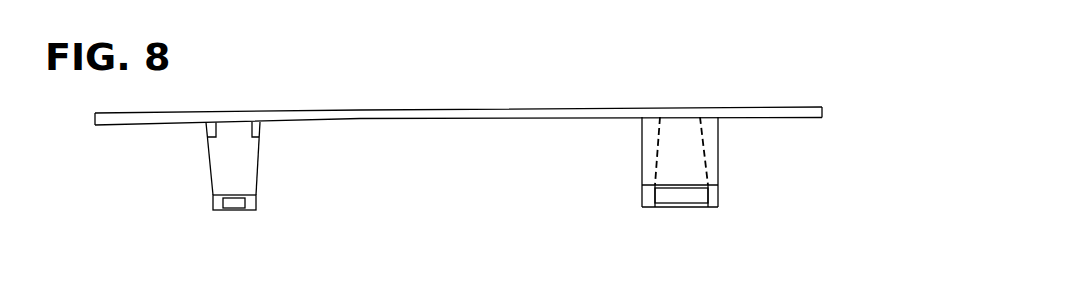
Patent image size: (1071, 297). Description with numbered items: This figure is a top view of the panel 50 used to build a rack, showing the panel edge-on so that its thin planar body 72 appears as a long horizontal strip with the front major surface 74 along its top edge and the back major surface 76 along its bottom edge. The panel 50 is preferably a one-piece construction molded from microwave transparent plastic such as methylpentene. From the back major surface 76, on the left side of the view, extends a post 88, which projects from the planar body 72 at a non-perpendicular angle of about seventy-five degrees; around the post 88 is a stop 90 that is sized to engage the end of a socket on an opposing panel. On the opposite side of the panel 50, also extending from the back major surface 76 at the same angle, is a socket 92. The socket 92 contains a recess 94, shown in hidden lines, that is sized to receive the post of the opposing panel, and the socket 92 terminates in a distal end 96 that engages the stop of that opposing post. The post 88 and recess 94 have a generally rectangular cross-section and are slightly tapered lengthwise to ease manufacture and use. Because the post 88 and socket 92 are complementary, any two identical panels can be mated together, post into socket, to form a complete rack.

The panel 50 is at (652, 94).
The planar body 72 is at (513, 108).
The front major surface 74 is at (373, 110).
The back major surface 76 is at (455, 122).
The stop 90 is at (258, 172).
The post 88 is at (253, 208).
The socket 92 is at (644, 207).
The recess 94 is at (655, 195).
The distal end 96 is at (716, 207).